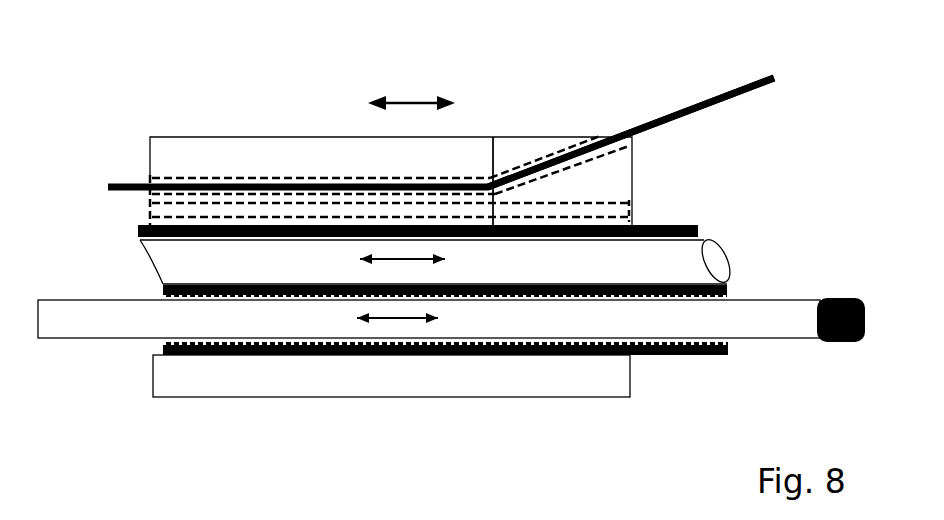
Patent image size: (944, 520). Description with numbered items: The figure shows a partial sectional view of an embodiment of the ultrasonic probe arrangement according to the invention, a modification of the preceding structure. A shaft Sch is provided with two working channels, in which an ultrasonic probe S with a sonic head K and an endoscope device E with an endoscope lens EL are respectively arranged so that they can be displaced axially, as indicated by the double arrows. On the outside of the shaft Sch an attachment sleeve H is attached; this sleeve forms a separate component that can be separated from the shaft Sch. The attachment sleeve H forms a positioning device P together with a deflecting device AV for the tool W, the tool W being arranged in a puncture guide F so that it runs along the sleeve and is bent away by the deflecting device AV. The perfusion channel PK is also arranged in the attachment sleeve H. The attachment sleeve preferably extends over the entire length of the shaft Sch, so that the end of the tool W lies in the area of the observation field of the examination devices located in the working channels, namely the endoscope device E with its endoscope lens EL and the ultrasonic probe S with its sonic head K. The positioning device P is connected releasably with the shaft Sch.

The attachment sleeve H is at (195, 158).
The puncture guide F is at (268, 178).
The positioning device P is at (318, 105).
The deflecting device AV is at (528, 152).
The tool W is at (703, 100).
The perfusion channel PK is at (603, 210).
The endoscope device E is at (188, 256).
The endoscope lens EL is at (718, 265).
The ultrasonic probe S is at (712, 325).
The sonic head K is at (830, 343).
The shaft Sch is at (393, 356).